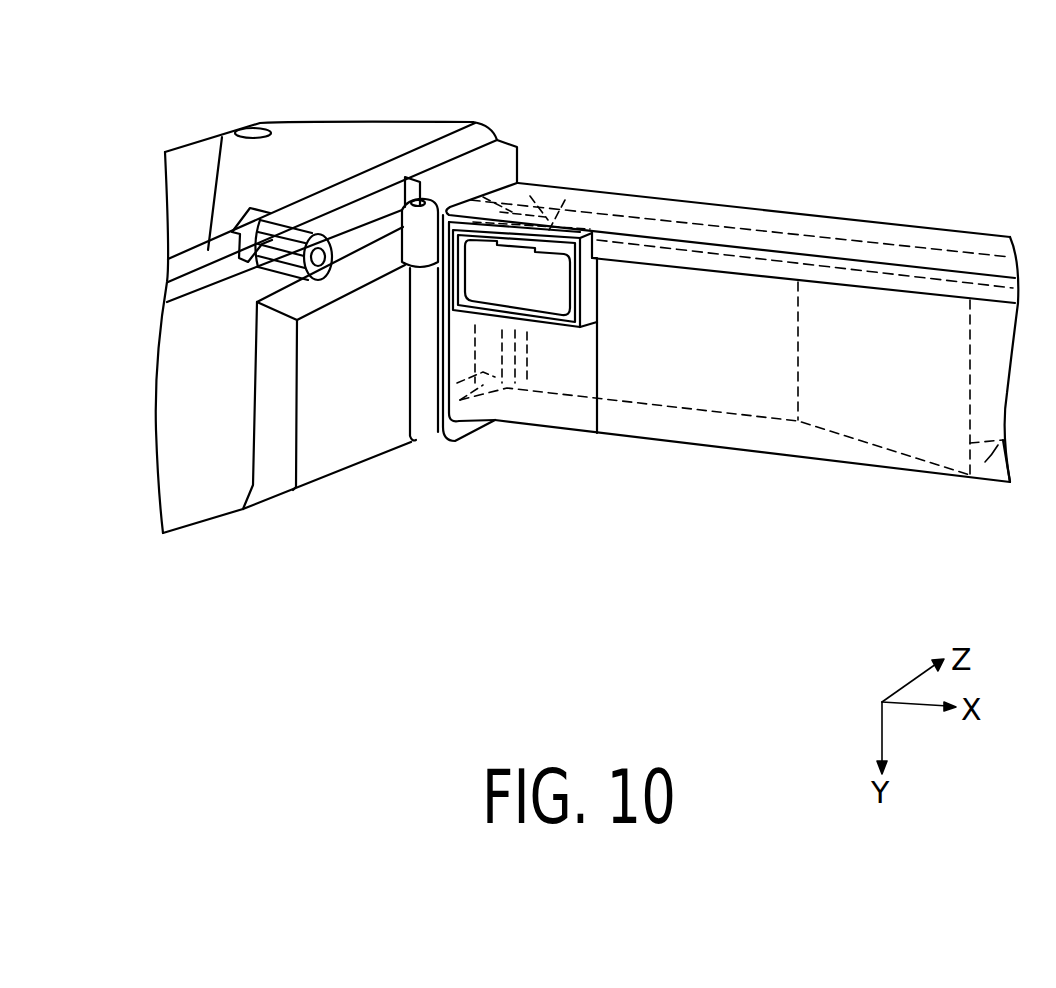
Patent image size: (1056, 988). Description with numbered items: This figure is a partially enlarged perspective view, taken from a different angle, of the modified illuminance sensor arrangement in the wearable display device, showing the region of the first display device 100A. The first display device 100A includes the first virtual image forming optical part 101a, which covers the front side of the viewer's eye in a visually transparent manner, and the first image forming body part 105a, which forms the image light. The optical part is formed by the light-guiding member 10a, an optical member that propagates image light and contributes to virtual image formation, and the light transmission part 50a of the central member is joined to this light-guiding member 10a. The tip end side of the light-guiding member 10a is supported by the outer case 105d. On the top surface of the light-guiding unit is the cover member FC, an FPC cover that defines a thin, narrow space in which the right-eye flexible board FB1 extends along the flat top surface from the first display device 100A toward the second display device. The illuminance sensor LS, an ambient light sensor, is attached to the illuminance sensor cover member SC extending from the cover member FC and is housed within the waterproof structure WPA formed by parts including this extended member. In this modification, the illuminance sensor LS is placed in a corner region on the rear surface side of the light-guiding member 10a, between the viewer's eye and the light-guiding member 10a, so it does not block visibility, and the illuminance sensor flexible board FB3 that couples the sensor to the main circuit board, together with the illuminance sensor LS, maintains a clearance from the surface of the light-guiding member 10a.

The outer case 105d is at (300, 140).
The illuminance sensor flexible board FB3 is at (550, 200).
The illuminance sensor LS is at (538, 285).
The cover member FC is at (820, 225).
The right-eye flexible board FB1 is at (918, 252).
The first image forming body part 105a is at (412, 447).
The waterproof structure WPA is at (500, 455).
The illuminance sensor cover member SC is at (546, 328).
The light-guiding member 10a is at (710, 427).
The first virtual image forming optical part 101a is at (840, 450).
The light transmission part 50a is at (983, 462).
The first display device 100A is at (655, 570).